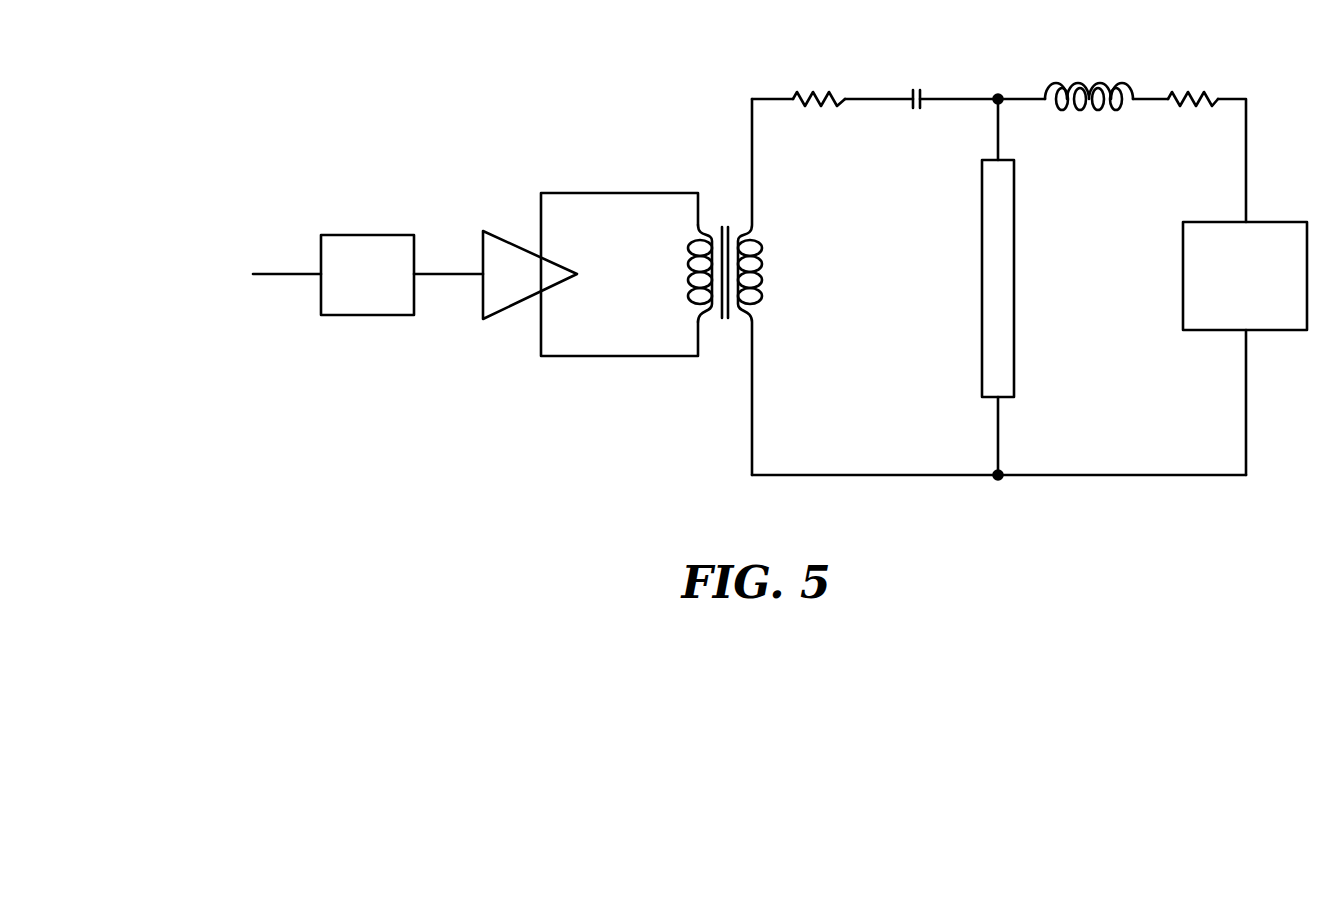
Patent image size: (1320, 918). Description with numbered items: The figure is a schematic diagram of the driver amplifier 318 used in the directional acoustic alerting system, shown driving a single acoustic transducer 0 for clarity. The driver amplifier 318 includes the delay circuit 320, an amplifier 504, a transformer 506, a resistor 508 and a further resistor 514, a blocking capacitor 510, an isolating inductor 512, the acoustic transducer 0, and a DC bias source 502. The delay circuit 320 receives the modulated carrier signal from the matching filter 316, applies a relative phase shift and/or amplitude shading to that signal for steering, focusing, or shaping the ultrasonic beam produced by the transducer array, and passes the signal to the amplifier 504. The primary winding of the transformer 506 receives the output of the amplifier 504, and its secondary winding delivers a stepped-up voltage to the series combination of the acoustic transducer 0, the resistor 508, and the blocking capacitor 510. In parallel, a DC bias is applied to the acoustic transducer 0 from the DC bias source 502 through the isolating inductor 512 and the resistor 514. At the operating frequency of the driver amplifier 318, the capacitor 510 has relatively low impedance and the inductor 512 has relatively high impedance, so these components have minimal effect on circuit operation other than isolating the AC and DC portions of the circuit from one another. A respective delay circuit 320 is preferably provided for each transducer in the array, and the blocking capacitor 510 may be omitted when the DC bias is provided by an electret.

The matching filter 316 is at (234, 277).
The delay circuit 320 is at (348, 303).
The driver amplifier 318 is at (483, 147).
The amplifier 504 is at (494, 288).
The transformer 506 is at (717, 378).
The resistor 508 is at (817, 91).
The blocking capacitor 510 is at (916, 88).
The acoustic transducer 0 is at (991, 292).
The isolating inductor 512 is at (1090, 83).
The resistor 514 is at (1196, 92).
The DC bias source 502 is at (1226, 318).